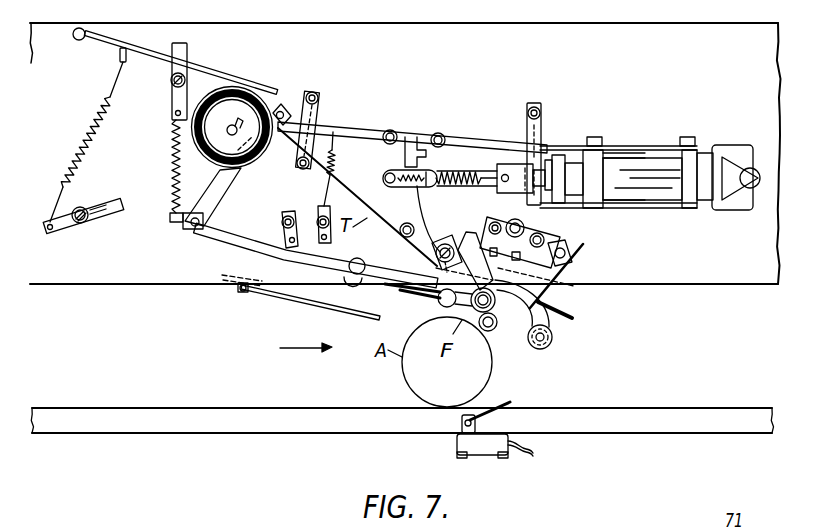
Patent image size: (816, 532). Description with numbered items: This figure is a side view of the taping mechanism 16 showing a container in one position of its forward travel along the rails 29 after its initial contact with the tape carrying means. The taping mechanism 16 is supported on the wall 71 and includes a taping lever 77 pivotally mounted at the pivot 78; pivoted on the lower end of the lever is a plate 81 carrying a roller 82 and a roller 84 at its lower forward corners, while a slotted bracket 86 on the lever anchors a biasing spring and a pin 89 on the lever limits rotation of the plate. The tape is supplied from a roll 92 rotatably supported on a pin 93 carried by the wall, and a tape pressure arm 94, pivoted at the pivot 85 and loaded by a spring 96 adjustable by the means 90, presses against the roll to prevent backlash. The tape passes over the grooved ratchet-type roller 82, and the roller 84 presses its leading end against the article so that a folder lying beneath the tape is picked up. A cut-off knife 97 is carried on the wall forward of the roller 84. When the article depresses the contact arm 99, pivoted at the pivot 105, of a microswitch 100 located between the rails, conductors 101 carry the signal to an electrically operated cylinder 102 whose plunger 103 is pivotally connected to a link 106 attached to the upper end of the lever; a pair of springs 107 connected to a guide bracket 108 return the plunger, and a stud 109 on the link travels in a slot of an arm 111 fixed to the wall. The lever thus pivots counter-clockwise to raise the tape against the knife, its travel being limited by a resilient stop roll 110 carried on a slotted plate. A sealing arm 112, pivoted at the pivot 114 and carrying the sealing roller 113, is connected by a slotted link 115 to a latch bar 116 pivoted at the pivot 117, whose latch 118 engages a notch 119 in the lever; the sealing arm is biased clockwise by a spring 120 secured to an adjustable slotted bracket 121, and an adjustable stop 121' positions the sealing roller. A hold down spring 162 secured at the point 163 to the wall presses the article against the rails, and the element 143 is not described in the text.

The taping mechanism 16 is at (485, 80).
The rails 29 is at (175, 421).
The wall 71 is at (702, 275).
The taping lever 77 is at (417, 204).
The pivot 78 is at (405, 225).
The plate 81 is at (468, 257).
The roller 82 is at (439, 301).
The roller 84 is at (497, 331).
The pivot 85 is at (79, 41).
The slotted bracket 86 is at (467, 231).
The pin 89 is at (443, 244).
The spring adjusting means 90 is at (57, 232).
The tape roll 92 is at (230, 141).
The pin 93 is at (232, 127).
The tape pressure arm 94 is at (260, 84).
The spring 96 is at (88, 146).
The cut-off knife 97 is at (586, 250).
The contact arm 99 is at (510, 399).
The microswitch 100 is at (447, 444).
The conductors 101 is at (531, 452).
The cylinder 102 is at (672, 188).
The plunger 103 is at (529, 223).
The pivot 105 is at (460, 422).
The link 106 is at (468, 170).
The springs 107 is at (389, 171).
The guide bracket 108 is at (516, 188).
The stud 109 is at (505, 163).
The stop roll 110 is at (546, 232).
The arm 111 is at (633, 144).
The sealing arm 112 is at (228, 237).
The sealing roller 113 is at (552, 342).
The pivot 114 is at (360, 279).
The link 115 is at (228, 188).
The latch bar 116 is at (352, 132).
The pivot 117 is at (540, 150).
The latch 118 is at (415, 137).
The notch 119 is at (433, 133).
The spring 120 is at (172, 167).
The slotted bracket 121 is at (157, 82).
The adjustable stop 121' is at (270, 229).
The stop rod 143 is at (545, 302).
The hold down spring 162 is at (292, 302).
The securing point 163 is at (243, 293).